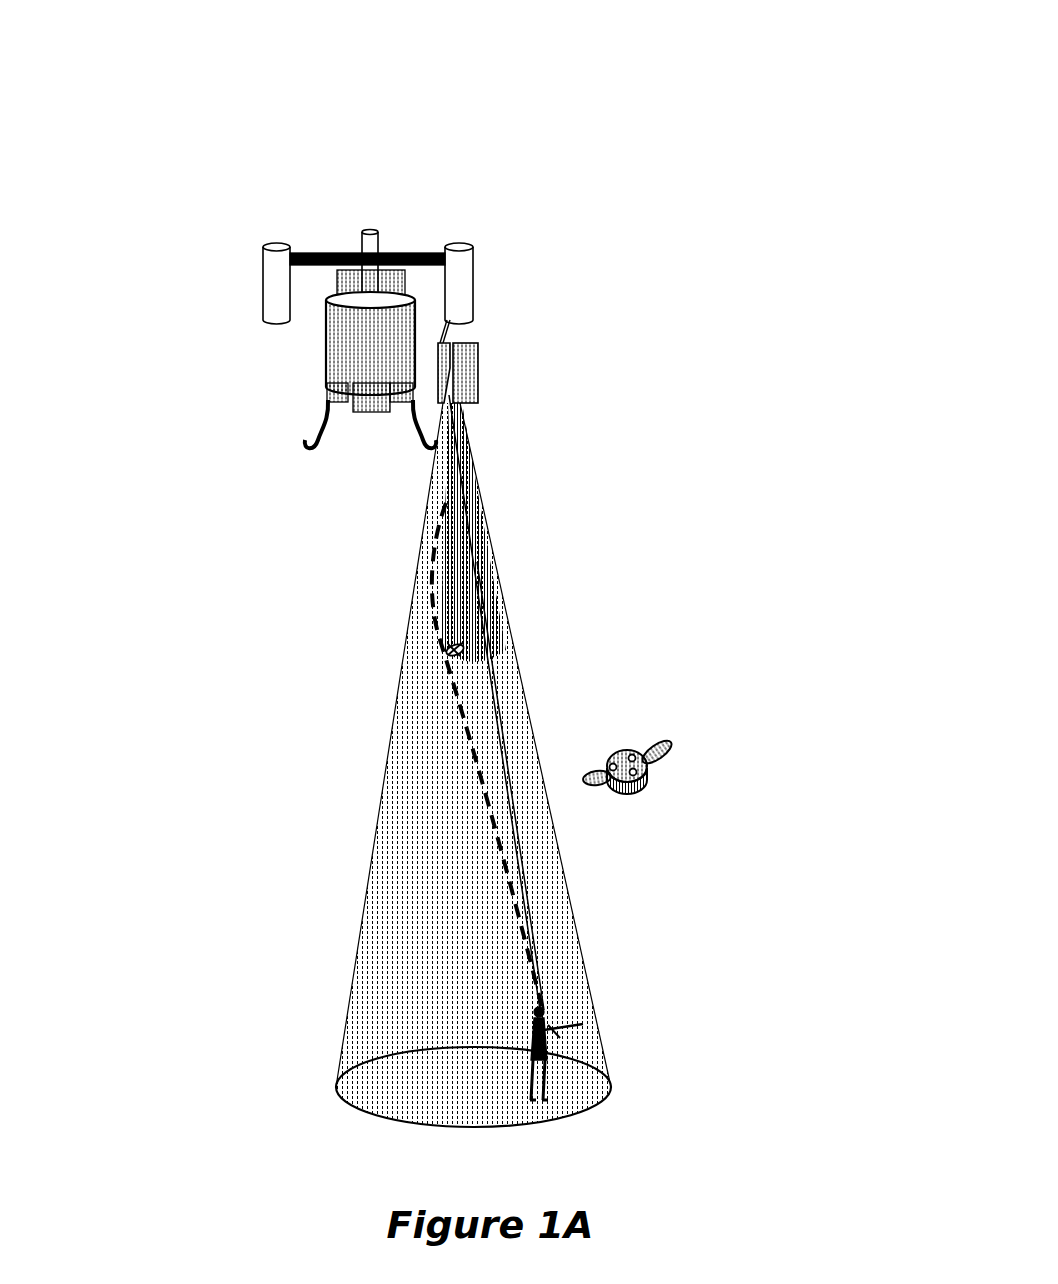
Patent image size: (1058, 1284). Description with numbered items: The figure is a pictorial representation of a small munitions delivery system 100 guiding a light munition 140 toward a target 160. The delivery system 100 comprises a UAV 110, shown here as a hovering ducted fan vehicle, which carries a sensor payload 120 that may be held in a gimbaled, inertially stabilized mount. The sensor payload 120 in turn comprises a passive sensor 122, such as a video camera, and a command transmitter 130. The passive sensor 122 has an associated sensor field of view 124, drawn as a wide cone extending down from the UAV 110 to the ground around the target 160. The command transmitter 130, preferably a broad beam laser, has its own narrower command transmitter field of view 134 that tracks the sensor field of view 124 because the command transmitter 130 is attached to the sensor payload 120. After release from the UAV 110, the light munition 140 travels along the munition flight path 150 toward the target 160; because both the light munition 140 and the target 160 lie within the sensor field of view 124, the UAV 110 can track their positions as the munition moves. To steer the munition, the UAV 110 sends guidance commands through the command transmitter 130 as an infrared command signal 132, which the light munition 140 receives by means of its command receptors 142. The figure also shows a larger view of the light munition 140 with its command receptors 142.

The small munitions delivery system 100 is at (840, 37).
The UAV 110 is at (260, 268).
The sensor payload 120 is at (632, 271).
The passive sensor 122 is at (457, 334).
The sensor field of view 124 is at (435, 1092).
The command transmitter 130 is at (478, 364).
The command signal 132 is at (473, 442).
The command transmitter field of view 134 is at (500, 645).
The light munition 140 is at (675, 725).
The command receptors 142 is at (622, 750).
The munition flight path 150 is at (503, 838).
The target 160 is at (547, 1057).